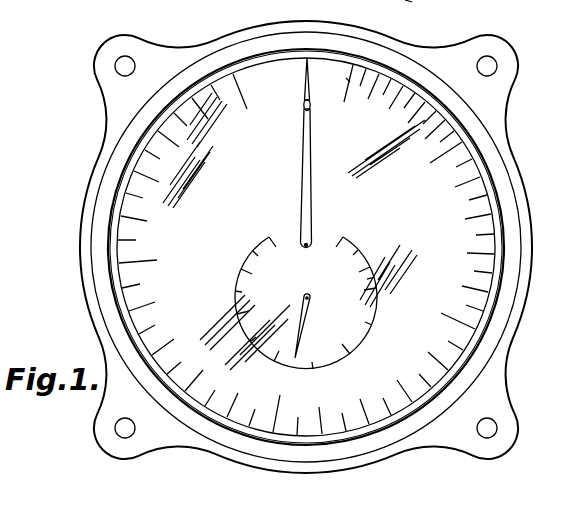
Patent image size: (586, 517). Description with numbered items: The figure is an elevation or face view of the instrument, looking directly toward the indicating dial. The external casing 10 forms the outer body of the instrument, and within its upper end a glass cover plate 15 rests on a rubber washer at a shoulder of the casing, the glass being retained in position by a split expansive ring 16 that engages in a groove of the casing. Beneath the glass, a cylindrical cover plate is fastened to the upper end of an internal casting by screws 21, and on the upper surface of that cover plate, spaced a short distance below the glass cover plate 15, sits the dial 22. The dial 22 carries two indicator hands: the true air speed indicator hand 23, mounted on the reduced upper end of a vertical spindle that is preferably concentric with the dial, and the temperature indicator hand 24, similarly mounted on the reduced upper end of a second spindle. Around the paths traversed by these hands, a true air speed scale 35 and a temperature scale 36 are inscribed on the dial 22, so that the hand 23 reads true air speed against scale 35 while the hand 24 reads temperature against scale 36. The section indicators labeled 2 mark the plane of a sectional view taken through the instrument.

The section line 2- 2 is at (306, 48).
The external casing 10 is at (533, 215).
The glass cover plate 15 is at (192, 157).
The split expansive ring 16 is at (123, 172).
The screws 21 is at (407, 0).
The dial 22 is at (427, 235).
The air speed indicator hand 23 is at (303, 168).
The temperature indicator hand 24 is at (309, 320).
The true air speed scale 35 is at (348, 80).
The temperature scale 36 is at (334, 241).